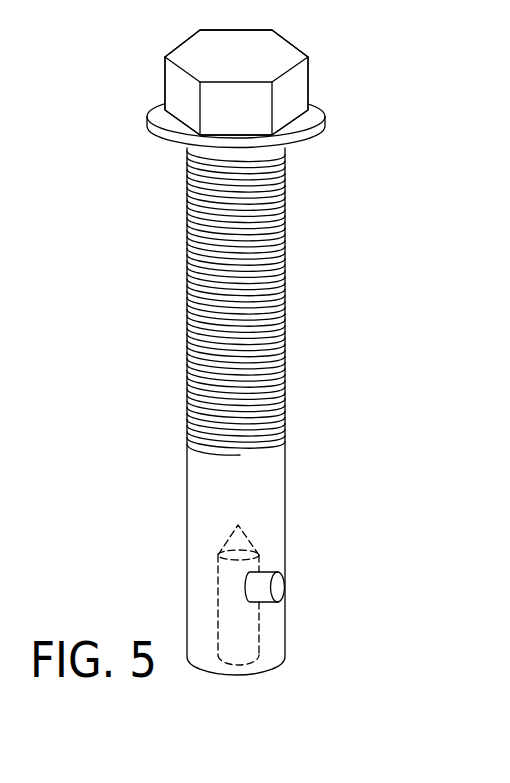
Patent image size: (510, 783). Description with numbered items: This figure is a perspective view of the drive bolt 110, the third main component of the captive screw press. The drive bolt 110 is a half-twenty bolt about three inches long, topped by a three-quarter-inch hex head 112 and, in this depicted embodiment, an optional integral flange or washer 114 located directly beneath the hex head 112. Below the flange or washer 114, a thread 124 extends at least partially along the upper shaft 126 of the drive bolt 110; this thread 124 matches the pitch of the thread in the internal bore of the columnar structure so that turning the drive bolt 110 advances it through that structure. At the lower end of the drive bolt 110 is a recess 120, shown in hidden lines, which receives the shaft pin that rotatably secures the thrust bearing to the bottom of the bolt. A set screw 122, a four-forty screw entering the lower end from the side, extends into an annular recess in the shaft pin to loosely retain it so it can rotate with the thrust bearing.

The drive bolt 110 is at (253, 352).
The hex head 112 is at (300, 83).
The integral flange or washer 114 is at (312, 120).
The recess 120 is at (253, 652).
The set screw 122 is at (282, 580).
The thread 124 is at (285, 297).
The upper shaft 126 is at (186, 311).